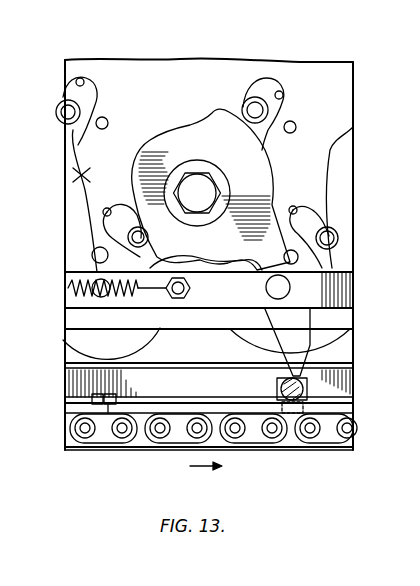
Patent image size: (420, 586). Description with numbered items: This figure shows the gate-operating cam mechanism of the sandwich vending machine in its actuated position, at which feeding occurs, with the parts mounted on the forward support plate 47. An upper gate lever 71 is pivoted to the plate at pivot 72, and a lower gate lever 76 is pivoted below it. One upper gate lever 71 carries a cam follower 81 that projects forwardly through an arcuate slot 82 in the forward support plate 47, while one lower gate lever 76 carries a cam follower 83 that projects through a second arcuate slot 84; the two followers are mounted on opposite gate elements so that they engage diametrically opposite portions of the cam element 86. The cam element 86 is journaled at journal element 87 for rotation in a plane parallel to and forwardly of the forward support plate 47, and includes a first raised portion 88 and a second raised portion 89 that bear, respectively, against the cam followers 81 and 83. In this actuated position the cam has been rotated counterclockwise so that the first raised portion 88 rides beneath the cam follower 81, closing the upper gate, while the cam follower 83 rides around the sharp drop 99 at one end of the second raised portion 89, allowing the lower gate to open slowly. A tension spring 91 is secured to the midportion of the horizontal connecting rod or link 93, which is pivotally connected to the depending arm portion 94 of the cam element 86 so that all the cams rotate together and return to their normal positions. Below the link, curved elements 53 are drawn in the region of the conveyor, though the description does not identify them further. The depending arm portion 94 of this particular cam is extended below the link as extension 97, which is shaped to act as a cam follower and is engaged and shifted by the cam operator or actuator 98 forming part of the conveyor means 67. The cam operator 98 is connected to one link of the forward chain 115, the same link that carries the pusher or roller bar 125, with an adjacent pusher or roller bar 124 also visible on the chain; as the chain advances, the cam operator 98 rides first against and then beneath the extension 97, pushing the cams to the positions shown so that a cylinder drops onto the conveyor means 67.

The forward support plate 47 is at (328, 68).
The cam roller 53 is at (143, 351).
The conveyor means 67 is at (75, 450).
The upper gate lever 71 is at (65, 118).
The pivot 72 is at (108, 121).
The lower gate lever 76 is at (153, 254).
The cam follower 81 is at (76, 108).
The arcuate slot 82 is at (80, 81).
The cam follower 83 is at (67, 236).
The second arcuate slot 84 is at (107, 209).
The cam element 86 is at (273, 170).
The journal element 87 is at (204, 182).
The first raised portion 88 is at (211, 113).
The second raised portion 89 is at (193, 258).
The tension spring 91 is at (138, 289).
The connecting rod or link 93 is at (348, 290).
The depending arm portion 94 is at (257, 266).
The extension 97 is at (303, 345).
The cam operator or actuator 98 is at (280, 387).
The sharp drop 99 is at (68, 258).
The forward chain 115 is at (332, 441).
The pusher or roller bar 124 is at (108, 408).
The pusher or roller bar 125 is at (292, 408).